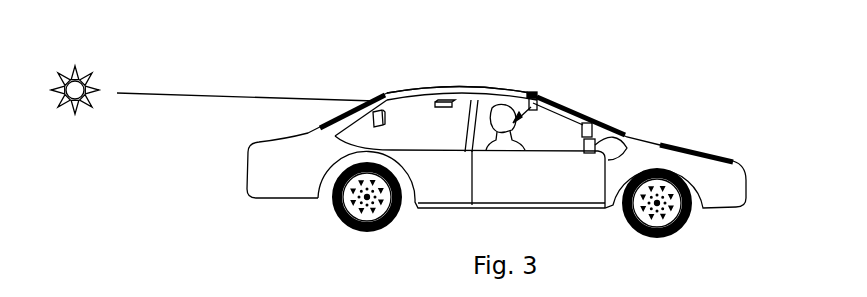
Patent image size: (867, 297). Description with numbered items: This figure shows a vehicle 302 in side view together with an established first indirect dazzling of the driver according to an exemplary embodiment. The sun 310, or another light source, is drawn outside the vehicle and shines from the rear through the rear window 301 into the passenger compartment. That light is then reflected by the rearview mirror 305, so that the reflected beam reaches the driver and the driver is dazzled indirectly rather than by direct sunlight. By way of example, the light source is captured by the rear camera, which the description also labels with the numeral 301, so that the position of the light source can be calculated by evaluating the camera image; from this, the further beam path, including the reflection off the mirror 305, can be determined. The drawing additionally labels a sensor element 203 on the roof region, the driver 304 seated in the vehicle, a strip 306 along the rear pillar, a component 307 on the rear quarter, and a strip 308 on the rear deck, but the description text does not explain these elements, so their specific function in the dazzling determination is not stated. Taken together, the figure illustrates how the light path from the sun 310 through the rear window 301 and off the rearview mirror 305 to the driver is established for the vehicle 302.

The sun 310 is at (72, 73).
The rear window 301 is at (376, 96).
The vehicle 302 is at (412, 90).
The sensor 203 is at (440, 99).
The driver (occupant) 304 is at (493, 110).
The rearview mirror 305 is at (537, 100).
The C-pillar solar strip 306 is at (558, 100).
The rear quarter sensor 307 is at (582, 132).
The trunk lid solar strip 308 is at (632, 138).